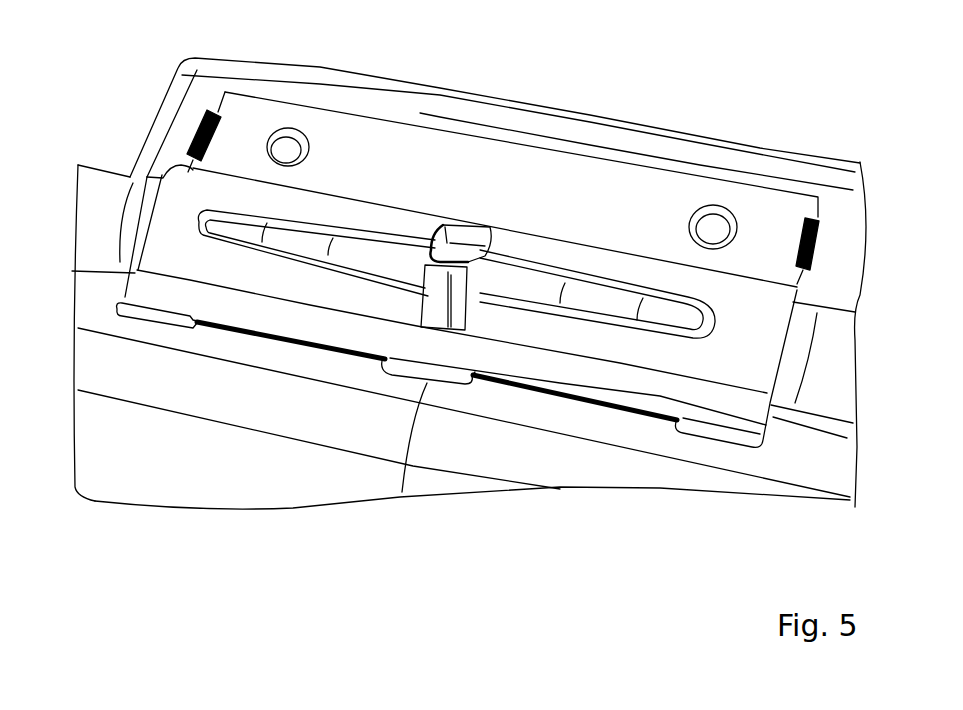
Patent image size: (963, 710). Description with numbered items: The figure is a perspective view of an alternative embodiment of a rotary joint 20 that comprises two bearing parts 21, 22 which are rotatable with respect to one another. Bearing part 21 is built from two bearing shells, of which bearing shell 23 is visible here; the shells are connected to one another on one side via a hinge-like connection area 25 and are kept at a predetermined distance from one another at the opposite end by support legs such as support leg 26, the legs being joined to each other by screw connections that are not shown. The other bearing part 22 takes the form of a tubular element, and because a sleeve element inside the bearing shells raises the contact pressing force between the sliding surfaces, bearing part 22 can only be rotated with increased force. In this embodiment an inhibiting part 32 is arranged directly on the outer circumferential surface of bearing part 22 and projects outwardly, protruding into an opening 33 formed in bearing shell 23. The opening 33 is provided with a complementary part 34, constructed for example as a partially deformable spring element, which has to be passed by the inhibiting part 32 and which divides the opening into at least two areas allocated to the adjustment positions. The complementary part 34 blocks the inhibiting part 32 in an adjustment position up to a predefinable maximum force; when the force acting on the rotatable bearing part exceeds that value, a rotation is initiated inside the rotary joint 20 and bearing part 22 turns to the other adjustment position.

The rotary joint 20 is at (208, 395).
The bearing part 21 is at (150, 135).
The bearing part 22 is at (827, 388).
The bearing shell 23 is at (700, 358).
The hinge-like connection area 25 is at (322, 364).
The support leg 26 is at (360, 157).
The inhibiting part 32 is at (460, 242).
The opening 33 is at (459, 316).
The complementary part 34 is at (448, 272).